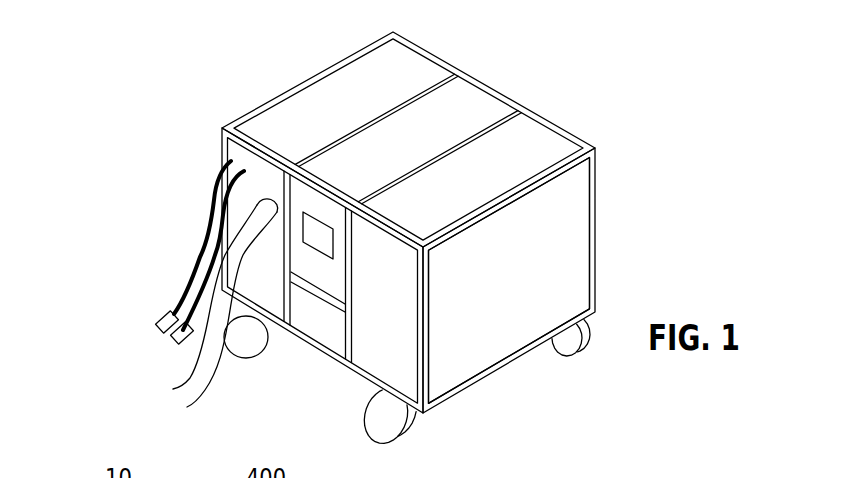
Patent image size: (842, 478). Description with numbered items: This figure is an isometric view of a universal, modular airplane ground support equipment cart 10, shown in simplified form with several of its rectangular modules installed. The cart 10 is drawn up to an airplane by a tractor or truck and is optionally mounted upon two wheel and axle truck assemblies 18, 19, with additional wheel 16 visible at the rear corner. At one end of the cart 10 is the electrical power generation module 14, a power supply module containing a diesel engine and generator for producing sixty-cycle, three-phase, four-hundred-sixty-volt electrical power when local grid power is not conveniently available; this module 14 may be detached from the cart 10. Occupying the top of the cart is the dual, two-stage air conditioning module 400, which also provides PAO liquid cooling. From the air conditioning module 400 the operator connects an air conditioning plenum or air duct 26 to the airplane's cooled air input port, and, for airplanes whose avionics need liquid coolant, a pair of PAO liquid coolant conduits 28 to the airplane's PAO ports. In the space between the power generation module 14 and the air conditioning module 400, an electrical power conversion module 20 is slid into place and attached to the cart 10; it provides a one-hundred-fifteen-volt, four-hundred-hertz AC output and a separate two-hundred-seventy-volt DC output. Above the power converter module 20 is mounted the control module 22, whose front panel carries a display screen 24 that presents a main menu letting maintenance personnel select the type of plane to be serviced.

The cart 10 is at (660, 175).
The dual air conditioning module 400 is at (388, 68).
The electrical power generation module 14 is at (520, 300).
The rear wheel 16 is at (513, 365).
The wheel and axle truck assembly 18 is at (243, 327).
The wheel and axle truck assembly 19 is at (383, 428).
The electrical power conversion module 20 is at (300, 323).
The control module 22 is at (303, 198).
The display screen 24 is at (310, 238).
The air duct 26 is at (203, 363).
The PAO liquid coolant conduits 28 is at (183, 298).